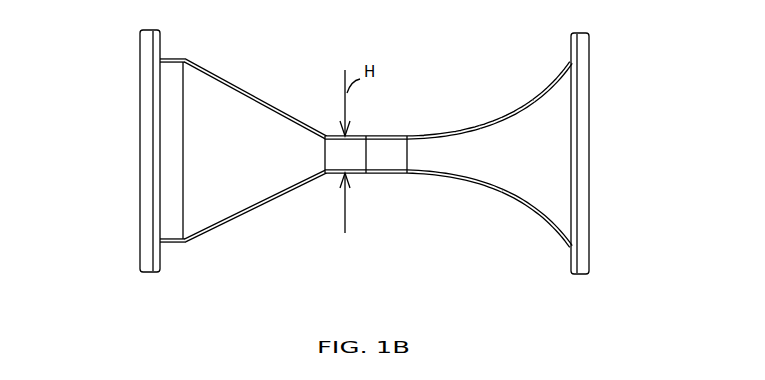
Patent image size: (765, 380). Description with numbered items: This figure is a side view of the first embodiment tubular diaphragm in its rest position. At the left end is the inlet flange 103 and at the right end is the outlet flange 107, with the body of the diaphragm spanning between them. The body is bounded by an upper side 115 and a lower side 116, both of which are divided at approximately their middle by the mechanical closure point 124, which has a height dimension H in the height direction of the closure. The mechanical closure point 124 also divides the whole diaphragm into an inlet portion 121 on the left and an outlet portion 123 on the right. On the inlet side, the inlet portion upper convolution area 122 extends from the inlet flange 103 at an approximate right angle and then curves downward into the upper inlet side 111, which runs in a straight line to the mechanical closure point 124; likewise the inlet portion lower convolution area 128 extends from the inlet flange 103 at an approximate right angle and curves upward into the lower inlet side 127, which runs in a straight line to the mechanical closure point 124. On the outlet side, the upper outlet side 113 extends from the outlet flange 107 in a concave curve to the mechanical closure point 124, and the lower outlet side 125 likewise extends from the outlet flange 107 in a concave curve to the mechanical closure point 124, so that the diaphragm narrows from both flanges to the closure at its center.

The inlet flange 103 is at (147, 83).
The outlet flange 107 is at (578, 234).
The upper inlet side 111 is at (246, 88).
The upper outlet side 113 is at (545, 90).
The upper side 115 is at (506, 116).
The lower side 116 is at (440, 176).
The inlet portion 121 is at (298, 120).
The inlet portion upper convolution area 122 is at (186, 59).
The outlet portion 123 is at (457, 129).
The mechanical closure point 124 is at (366, 135).
The lower outlet side 125 is at (528, 207).
The lower inlet side 127 is at (244, 216).
The inlet portion lower convolution area 128 is at (186, 243).